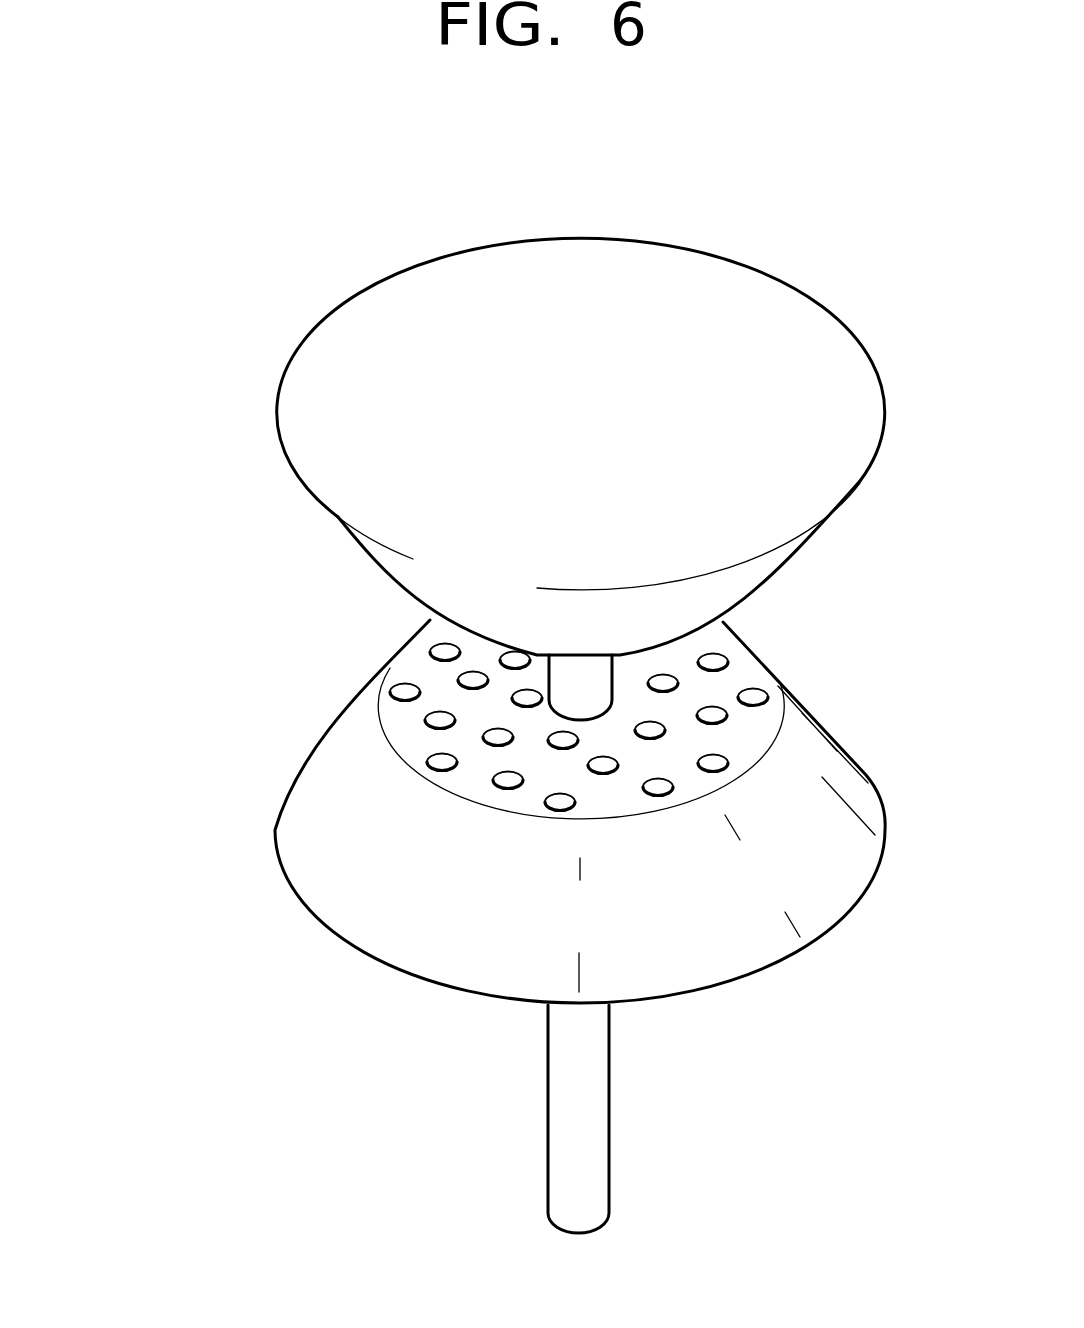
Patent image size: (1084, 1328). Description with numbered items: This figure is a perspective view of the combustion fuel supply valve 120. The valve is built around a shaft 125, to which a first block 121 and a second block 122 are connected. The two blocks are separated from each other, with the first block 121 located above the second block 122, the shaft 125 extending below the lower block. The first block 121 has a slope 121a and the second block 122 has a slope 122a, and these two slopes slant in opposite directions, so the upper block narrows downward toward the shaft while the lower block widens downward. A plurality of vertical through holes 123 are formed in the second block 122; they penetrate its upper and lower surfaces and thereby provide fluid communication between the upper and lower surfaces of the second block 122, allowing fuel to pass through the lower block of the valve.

The combustion fuel supply valve 120 is at (126, 263).
The first block 121 is at (316, 562).
The slope 121a is at (772, 566).
The second block 122 is at (289, 726).
The slope 122a is at (838, 746).
The vertical through holes 123 is at (716, 712).
The shaft 125 is at (605, 1113).